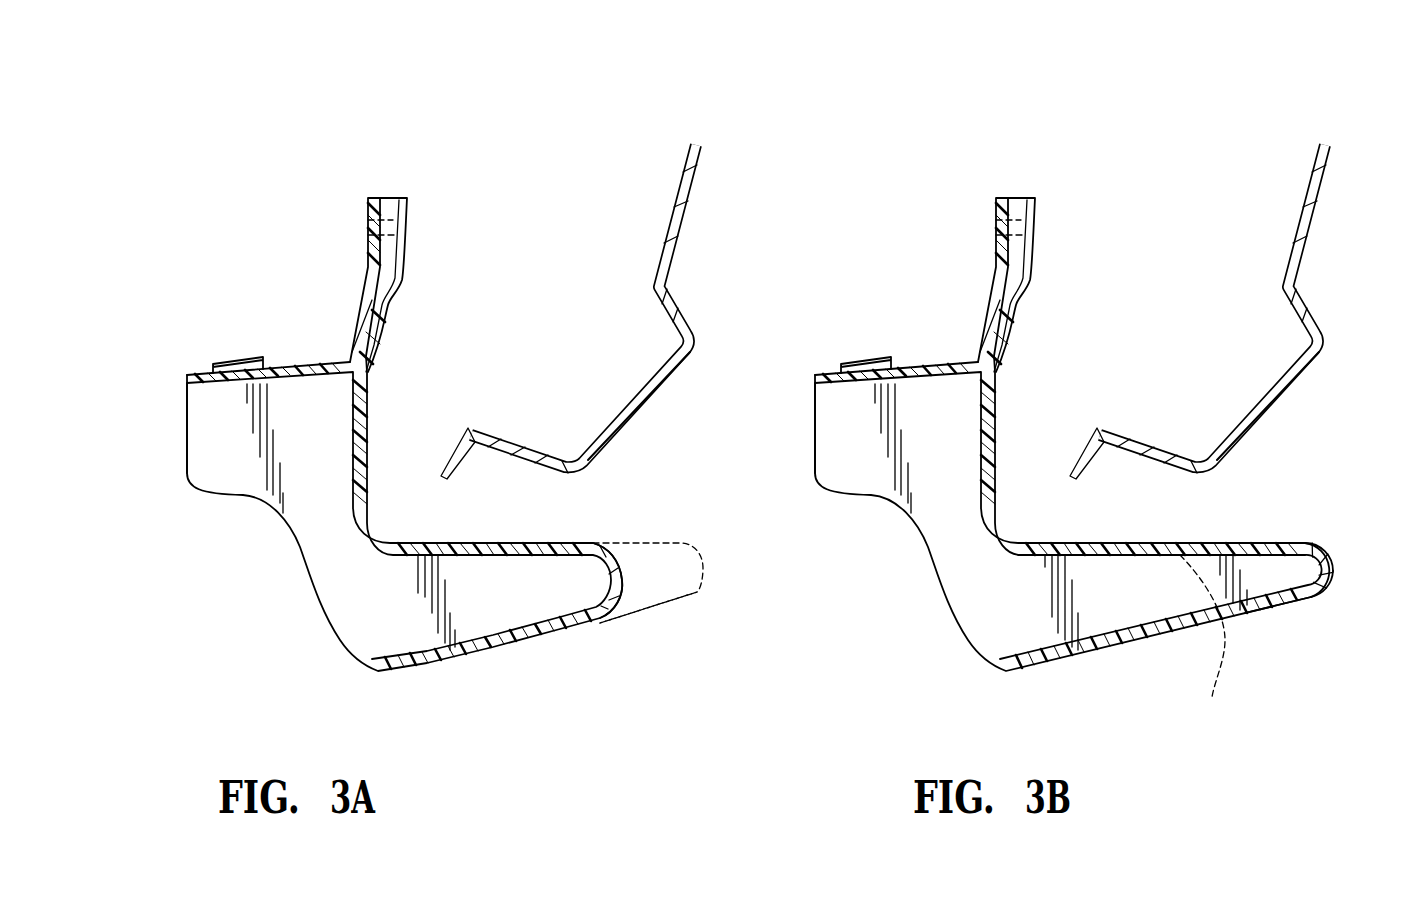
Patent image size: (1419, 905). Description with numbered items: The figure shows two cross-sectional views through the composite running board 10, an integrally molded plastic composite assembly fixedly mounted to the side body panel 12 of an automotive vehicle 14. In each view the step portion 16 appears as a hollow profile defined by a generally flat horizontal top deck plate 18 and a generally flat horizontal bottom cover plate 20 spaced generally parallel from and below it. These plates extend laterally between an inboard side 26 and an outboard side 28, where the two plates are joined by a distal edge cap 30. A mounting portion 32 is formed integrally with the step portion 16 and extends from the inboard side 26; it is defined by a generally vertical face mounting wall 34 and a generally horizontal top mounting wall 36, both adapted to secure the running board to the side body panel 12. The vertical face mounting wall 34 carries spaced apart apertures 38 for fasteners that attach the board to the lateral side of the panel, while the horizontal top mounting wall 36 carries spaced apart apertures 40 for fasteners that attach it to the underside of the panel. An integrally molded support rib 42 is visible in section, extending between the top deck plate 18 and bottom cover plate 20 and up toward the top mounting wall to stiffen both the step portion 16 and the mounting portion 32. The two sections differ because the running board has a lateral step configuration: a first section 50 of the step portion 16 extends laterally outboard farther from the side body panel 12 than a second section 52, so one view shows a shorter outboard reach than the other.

In FIG. 3A, the composite running board 10 is at (527, 680).
In FIG. 3B, the composite running board 10 is at (1255, 672).
In FIG. 3A, the side body panel 12 is at (665, 396).
In FIG. 3B, the side body panel 12 is at (1294, 394).
In FIG. 3A, the automotive vehicle 14 is at (698, 143).
In FIG. 3B, the automotive vehicle 14 is at (1327, 143).
In FIG. 3A, the step portion 16 is at (598, 540).
In FIG. 3B, the step portion 16 is at (1260, 541).
In FIG. 3A, the top deck plate 18 is at (432, 543).
In FIG. 3B, the top deck plate 18 is at (1097, 543).
In FIG. 3A, the bottom cover plate 20 is at (478, 660).
In FIG. 3B, the bottom cover plate 20 is at (1135, 650).
In FIG. 3A, the inboard side 26 is at (187, 420).
In FIG. 3B, the inboard side 26 is at (815, 412).
In FIG. 3A, the outboard side 28 is at (705, 580).
In FIG. 3B, the outboard side 28 is at (1332, 587).
In FIG. 3A, the distal edge cap 30 is at (622, 578).
In FIG. 3B, the distal edge cap 30 is at (1335, 567).
In FIG. 3A, the mounting portion 32 is at (357, 298).
In FIG. 3B, the mounting portion 32 is at (965, 308).
In FIG. 3A, the vertical face mounting wall 34 is at (404, 251).
In FIG. 3B, the vertical face mounting wall 34 is at (1032, 250).
In FIG. 3A, the horizontal top mounting wall 36 is at (310, 360).
In FIG. 3B, the horizontal top mounting wall 36 is at (938, 360).
In FIG. 3A, the apertures 38 is at (402, 209).
In FIG. 3B, the apertures 38 is at (1030, 209).
In FIG. 3A, the apertures 40 is at (237, 357).
In FIG. 3B, the apertures 40 is at (865, 357).
In FIG. 3A, the support ribs 42 is at (330, 514).
In FIG. 3B, the support ribs 42 is at (958, 514).
In FIG. 3A, the first section 50 is at (704, 590).
In FIG. 3B, the first section 50 is at (1302, 608).
In FIG. 3A, the second section 52 is at (582, 636).
In FIG. 3B, the second section 52 is at (1205, 589).